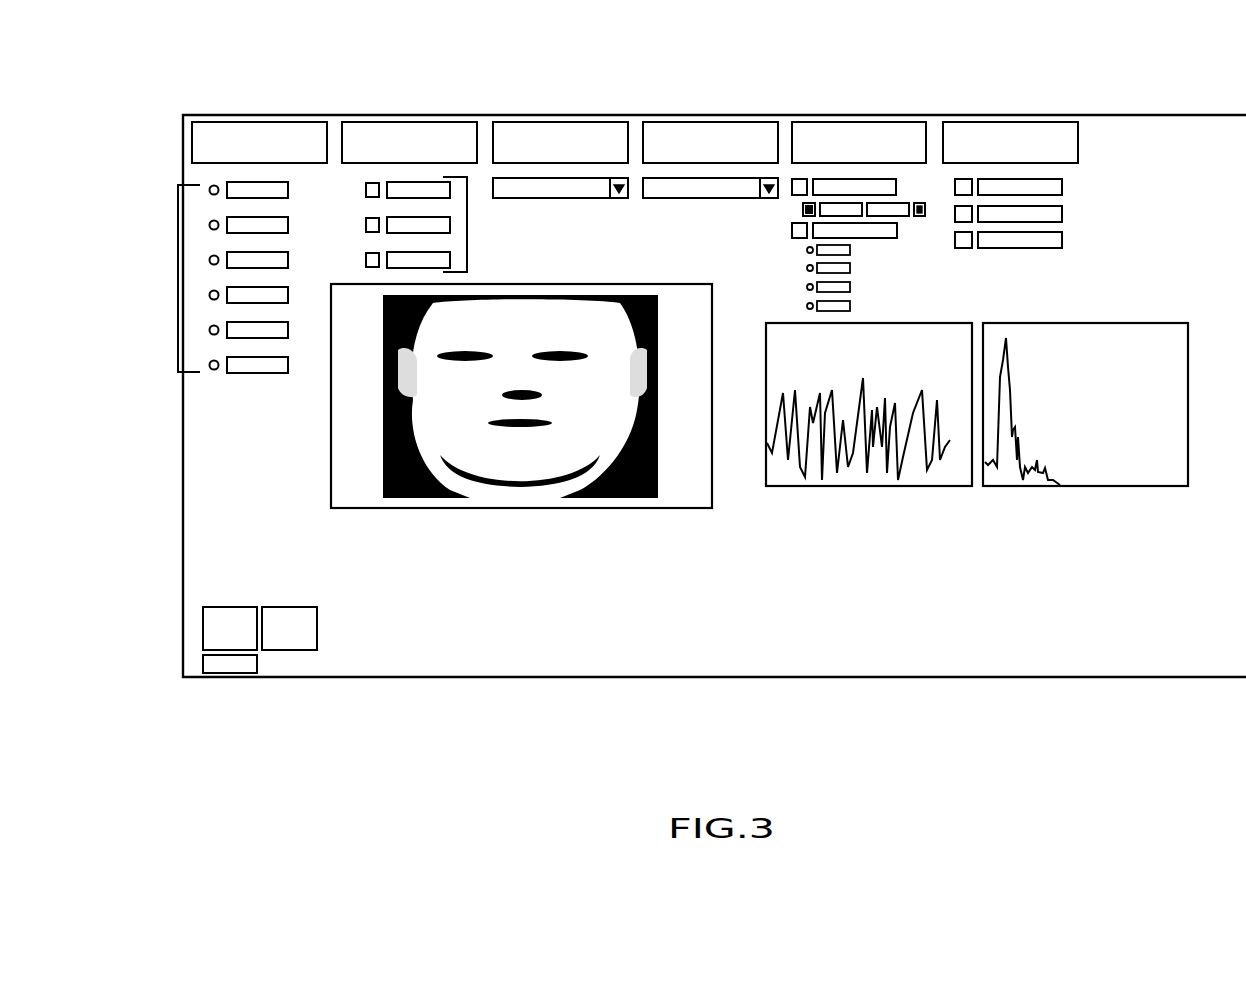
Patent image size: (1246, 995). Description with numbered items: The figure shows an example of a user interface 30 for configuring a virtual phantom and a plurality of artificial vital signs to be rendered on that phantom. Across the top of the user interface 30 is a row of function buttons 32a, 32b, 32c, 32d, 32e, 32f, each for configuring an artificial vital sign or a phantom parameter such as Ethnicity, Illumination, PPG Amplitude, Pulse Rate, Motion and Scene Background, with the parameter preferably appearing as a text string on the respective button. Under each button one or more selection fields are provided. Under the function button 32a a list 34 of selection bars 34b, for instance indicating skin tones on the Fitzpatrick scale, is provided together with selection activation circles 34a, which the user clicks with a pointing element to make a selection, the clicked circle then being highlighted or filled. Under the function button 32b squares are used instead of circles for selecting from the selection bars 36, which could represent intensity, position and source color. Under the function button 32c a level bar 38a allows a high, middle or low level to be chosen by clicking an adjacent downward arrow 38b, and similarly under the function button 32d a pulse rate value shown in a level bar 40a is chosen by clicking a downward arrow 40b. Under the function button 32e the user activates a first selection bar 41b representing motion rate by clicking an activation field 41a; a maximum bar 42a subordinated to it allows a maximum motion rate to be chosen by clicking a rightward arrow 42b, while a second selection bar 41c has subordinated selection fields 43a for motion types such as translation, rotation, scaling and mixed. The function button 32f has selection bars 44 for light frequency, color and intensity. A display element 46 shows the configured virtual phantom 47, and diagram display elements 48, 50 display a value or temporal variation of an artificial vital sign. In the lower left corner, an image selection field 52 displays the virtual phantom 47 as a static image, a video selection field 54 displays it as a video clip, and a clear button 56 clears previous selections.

The user interface 30 is at (887, 677).
The function button 32a is at (263, 122).
The function button 32b is at (408, 122).
The function button 32c is at (555, 122).
The function button 32d is at (708, 122).
The function button 32e is at (855, 122).
The function button 32f is at (992, 122).
The list of selectable items 34 is at (228, 277).
The selection activation circle 34a is at (213, 191).
The selection bar 34b is at (258, 200).
The selection bars 36 is at (468, 225).
The level bar 38a is at (546, 199).
The downward arrow 38b is at (620, 199).
The level bar 40a is at (696, 199).
The downward arrow 40b is at (772, 199).
The activation field 41a is at (793, 179).
The first selection bar 41b is at (853, 179).
The second selection bar 41c is at (868, 238).
The maximum bar 42a is at (890, 203).
The rightward arrow 42b is at (920, 217).
The selection fields 43a is at (806, 289).
The selection bars 44 is at (1062, 185).
The display element 46 is at (447, 508).
The virtual phantom 47 is at (587, 508).
The diagram display element 48 is at (847, 486).
The diagram display element 50 is at (1065, 486).
The image selection field 52 is at (230, 607).
The video selection field 54 is at (317, 628).
The clear button 56 is at (257, 664).